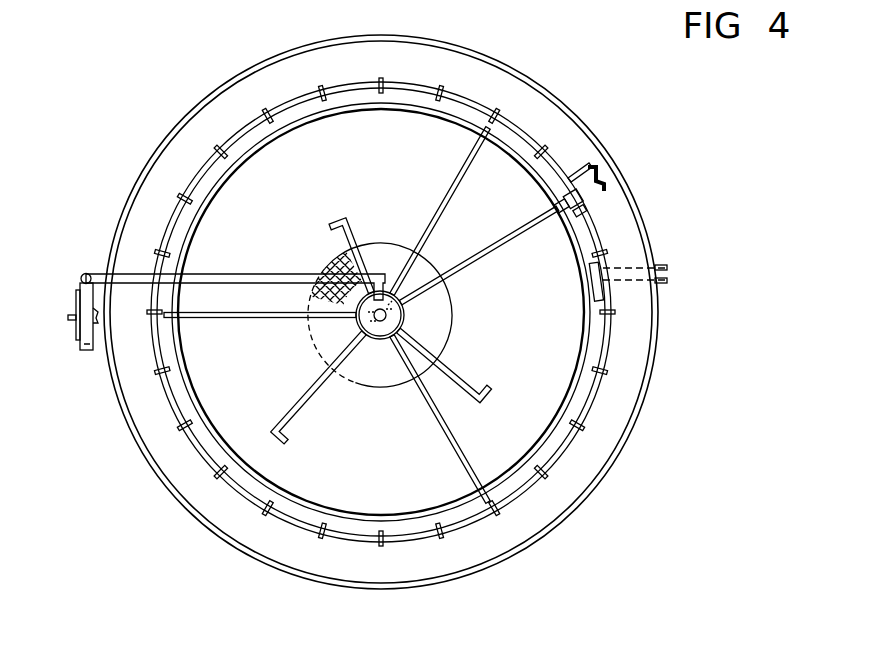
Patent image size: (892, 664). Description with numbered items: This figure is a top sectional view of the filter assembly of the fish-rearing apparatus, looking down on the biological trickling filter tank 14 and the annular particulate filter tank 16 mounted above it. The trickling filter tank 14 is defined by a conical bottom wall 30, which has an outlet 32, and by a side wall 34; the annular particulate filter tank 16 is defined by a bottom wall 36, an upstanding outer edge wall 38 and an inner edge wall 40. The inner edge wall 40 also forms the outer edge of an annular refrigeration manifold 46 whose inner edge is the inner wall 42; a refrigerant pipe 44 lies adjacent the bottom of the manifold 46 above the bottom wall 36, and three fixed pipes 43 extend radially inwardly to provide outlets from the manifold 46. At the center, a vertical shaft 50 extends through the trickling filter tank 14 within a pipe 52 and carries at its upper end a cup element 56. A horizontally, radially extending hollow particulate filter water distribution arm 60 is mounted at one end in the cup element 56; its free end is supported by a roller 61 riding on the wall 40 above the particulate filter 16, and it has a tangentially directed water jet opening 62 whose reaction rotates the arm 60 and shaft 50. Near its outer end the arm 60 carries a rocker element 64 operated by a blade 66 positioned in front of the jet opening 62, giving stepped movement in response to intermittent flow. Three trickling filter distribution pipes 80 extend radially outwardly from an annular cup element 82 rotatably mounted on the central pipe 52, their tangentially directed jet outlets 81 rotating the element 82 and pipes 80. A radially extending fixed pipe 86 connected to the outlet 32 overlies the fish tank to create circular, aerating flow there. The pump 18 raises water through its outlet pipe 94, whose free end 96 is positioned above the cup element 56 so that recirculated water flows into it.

The biological trickling filter tank 14 is at (640, 492).
The annular particulate filter tank 16 is at (646, 325).
The pump 18 is at (82, 350).
The conical bottom wall 30 is at (489, 322).
The outlet 32 is at (314, 336).
The side wall 34 is at (583, 298).
The bottom wall 36 is at (612, 354).
The upstanding outer edge wall 38 is at (656, 357).
The inner edge wall 40 is at (603, 380).
The inner wall 42 is at (603, 386).
The fixed pipes 43 is at (464, 166).
The refrigerant pipe 44 is at (600, 280).
The annular refrigeration manifold 46 is at (593, 398).
The vertical shaft 50 is at (408, 310).
The pipe 52 is at (392, 318).
The cup element 56 is at (352, 298).
The particulate filter water distribution arm 60 is at (485, 252).
The roller 61 is at (560, 199).
The water jet opening 62 is at (600, 167).
The rocker element 64 is at (586, 212).
The blade 66 is at (596, 162).
The trickling filter distribution pipes 80 is at (358, 240).
The tangentially directed jet outlets 81 is at (348, 215).
The annular cup element 82 is at (376, 343).
The radially extending fixed pipe 86 is at (540, 150).
The pump outlet pipe 94 is at (84, 272).
The free end 96 is at (381, 272).